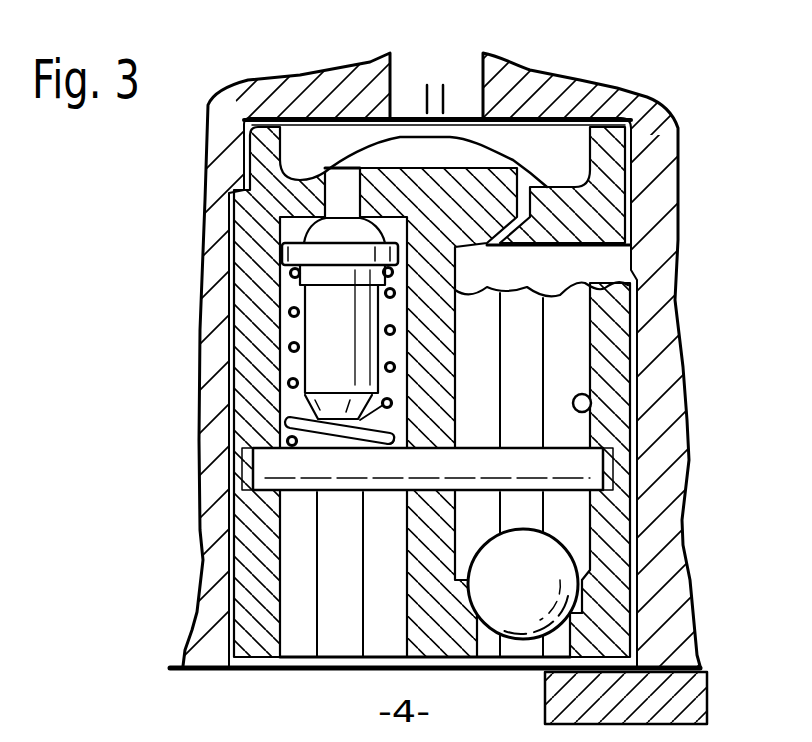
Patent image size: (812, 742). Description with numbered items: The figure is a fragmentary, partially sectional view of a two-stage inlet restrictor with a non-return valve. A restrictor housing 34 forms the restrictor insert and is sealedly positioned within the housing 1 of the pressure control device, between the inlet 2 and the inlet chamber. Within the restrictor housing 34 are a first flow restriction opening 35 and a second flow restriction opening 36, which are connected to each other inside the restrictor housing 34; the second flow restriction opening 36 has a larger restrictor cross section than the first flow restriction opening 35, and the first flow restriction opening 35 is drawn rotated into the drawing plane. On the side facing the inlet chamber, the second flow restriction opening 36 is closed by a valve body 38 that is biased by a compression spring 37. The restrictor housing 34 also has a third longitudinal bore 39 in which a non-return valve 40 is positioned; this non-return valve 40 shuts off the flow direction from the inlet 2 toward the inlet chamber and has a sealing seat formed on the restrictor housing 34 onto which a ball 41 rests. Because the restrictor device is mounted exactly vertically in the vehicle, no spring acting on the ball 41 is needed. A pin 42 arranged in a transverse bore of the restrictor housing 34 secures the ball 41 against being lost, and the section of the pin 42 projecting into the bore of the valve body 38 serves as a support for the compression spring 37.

The housing 1 is at (250, 100).
The inlet 2 is at (433, 66).
The restrictor housing 34 is at (610, 340).
The first flow restriction opening 35 is at (530, 216).
The second flow restriction opening 36 is at (335, 205).
The compression spring 37 is at (283, 402).
The valve body 38 is at (325, 321).
The third longitudinal bore 39 is at (590, 402).
The non-return valve 40 is at (598, 613).
The ball 41 is at (555, 565).
The pin 42 is at (590, 468).